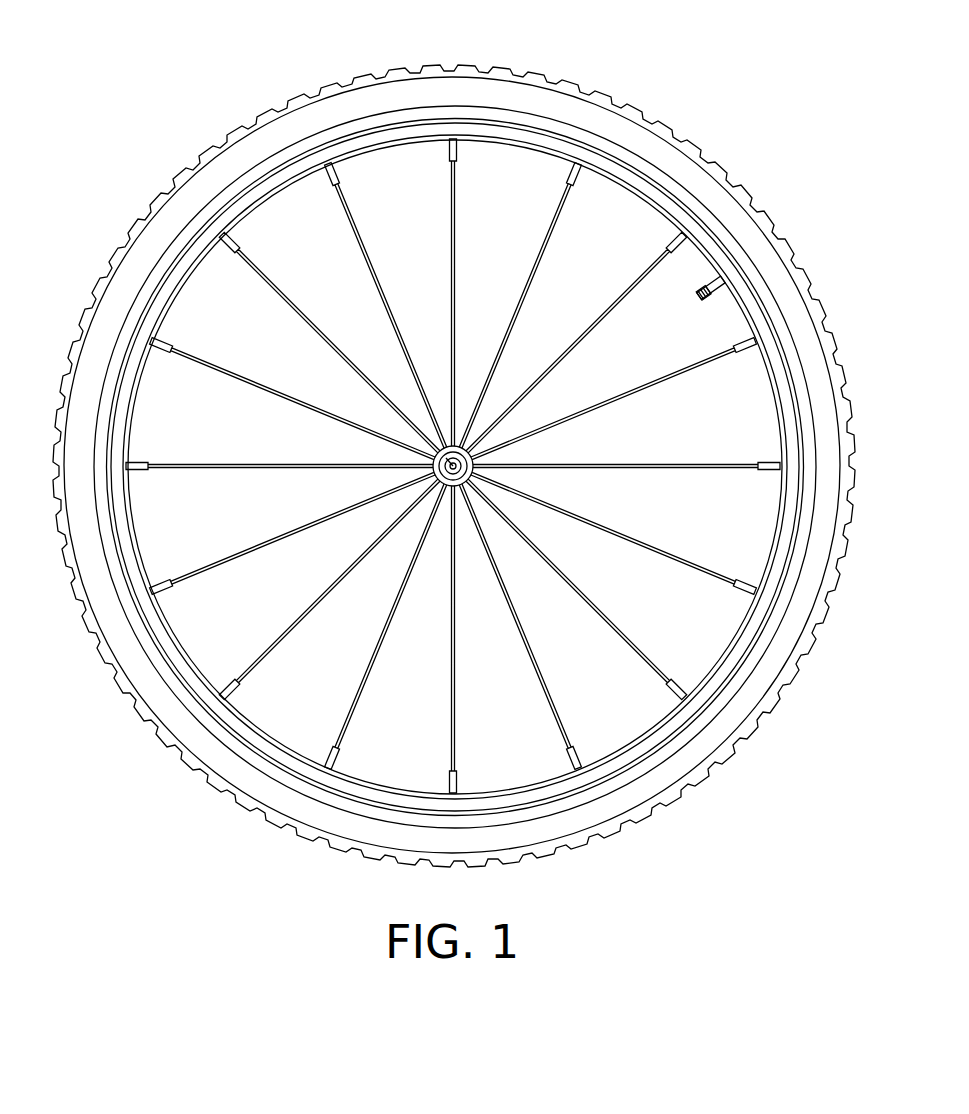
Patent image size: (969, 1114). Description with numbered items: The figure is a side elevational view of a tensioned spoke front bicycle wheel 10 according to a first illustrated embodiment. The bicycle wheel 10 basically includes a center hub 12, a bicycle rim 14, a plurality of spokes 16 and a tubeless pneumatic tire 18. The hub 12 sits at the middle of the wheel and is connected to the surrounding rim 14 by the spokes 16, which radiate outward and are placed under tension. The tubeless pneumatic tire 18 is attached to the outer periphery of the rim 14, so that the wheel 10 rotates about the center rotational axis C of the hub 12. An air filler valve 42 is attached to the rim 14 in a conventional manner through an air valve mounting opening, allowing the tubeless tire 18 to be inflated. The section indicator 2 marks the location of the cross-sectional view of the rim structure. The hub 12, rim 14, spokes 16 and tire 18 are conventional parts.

The bicycle wheel 10 is at (716, 86).
The center hub 12 is at (488, 471).
The bicycle rim 14 is at (638, 205).
The spokes 16 is at (360, 265).
The tubeless pneumatic tire 18 is at (251, 108).
The air filler valve 42 is at (705, 300).
The section line for FIG. 2 is at (453, 40).
The center rotational axis C is at (446, 459).